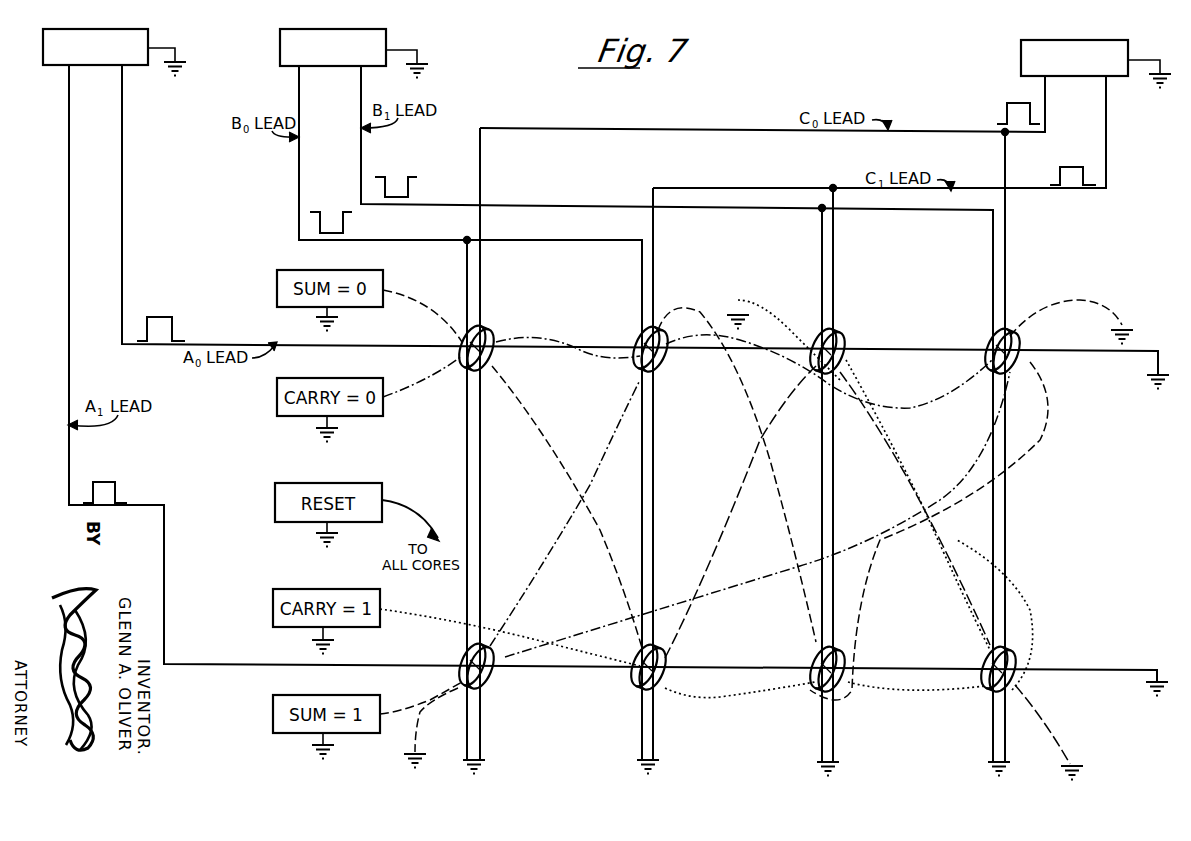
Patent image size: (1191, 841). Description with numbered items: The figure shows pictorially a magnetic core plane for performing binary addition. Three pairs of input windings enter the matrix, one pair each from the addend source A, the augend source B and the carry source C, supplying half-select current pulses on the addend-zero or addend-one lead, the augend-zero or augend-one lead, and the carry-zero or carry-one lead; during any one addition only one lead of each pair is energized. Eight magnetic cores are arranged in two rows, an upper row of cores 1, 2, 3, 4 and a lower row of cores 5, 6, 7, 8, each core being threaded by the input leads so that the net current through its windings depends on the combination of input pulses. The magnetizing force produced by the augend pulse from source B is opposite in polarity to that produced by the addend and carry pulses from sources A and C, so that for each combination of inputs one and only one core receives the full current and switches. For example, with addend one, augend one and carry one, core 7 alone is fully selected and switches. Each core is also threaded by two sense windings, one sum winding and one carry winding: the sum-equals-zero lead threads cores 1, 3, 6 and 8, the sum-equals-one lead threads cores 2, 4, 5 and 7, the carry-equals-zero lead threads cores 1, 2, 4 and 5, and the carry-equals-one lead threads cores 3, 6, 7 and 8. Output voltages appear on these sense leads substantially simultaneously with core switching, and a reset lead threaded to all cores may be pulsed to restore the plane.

The addend source A is at (120, 30).
The augend source B is at (363, 30).
The carry source C is at (1066, 41).
The core 1 is at (486, 344).
The core 2 is at (642, 345).
The core 3 is at (837, 347).
The core 4 is at (992, 347).
The core 5 is at (489, 671).
The core 6 is at (636, 671).
The core 7 is at (813, 673).
The core 8 is at (1012, 672).